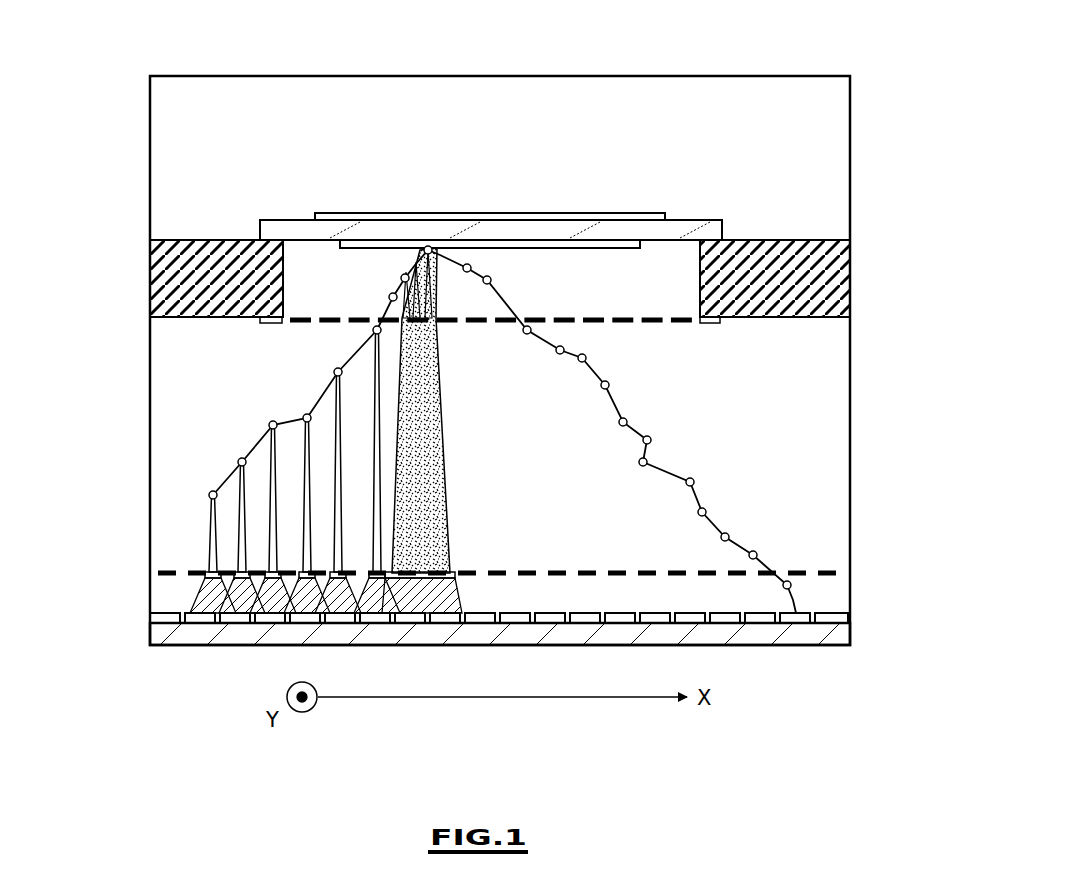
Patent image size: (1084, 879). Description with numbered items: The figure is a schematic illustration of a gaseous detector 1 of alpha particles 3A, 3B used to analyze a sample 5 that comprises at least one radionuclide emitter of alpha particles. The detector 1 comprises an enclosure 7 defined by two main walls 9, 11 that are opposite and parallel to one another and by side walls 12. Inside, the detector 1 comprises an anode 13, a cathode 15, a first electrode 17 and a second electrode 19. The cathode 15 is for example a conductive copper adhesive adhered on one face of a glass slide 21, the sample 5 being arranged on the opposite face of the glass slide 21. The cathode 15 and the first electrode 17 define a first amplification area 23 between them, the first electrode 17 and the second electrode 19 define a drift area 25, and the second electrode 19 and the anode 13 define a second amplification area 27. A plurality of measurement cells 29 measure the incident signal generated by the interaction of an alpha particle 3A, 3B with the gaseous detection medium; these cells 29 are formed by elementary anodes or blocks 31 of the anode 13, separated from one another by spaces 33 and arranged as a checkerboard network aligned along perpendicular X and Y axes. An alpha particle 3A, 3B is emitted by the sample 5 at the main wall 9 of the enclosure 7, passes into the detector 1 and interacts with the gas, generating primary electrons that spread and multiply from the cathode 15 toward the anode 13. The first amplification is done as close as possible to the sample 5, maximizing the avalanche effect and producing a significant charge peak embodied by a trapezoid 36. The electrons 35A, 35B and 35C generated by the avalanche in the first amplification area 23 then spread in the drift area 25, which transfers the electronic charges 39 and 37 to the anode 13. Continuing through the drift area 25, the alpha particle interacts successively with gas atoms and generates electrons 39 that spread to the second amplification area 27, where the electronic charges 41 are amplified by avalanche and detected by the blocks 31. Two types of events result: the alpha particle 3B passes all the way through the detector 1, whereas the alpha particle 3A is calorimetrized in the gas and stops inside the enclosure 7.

The detector 1 is at (887, 487).
The alpha particle 3A is at (424, 236).
The alpha particle 3B is at (446, 244).
The sample 5 is at (616, 219).
The enclosure 7 is at (782, 385).
The main wall 9 is at (788, 76).
The main wall 11 is at (735, 645).
The side walls 12 is at (850, 338).
The anode 13 is at (850, 616).
The cathode 15 is at (432, 214).
The first electrode 17 is at (679, 323).
The second electrode 19 is at (658, 573).
The glass slide 21 is at (700, 221).
The first amplification area 23 is at (320, 262).
The drift area 25 is at (208, 418).
The second amplification area 27 is at (172, 600).
The measurement cells 29 is at (795, 590).
The blocks 31 is at (834, 618).
The spaces 33 is at (712, 600).
The electrons 35A is at (434, 285).
The electrons 35B is at (440, 312).
The electrons 35C is at (392, 312).
The trapezoid 36 is at (420, 600).
The electronic charges 37 is at (442, 500).
The electrons 39 is at (265, 523).
The electronic charges 41 is at (243, 615).